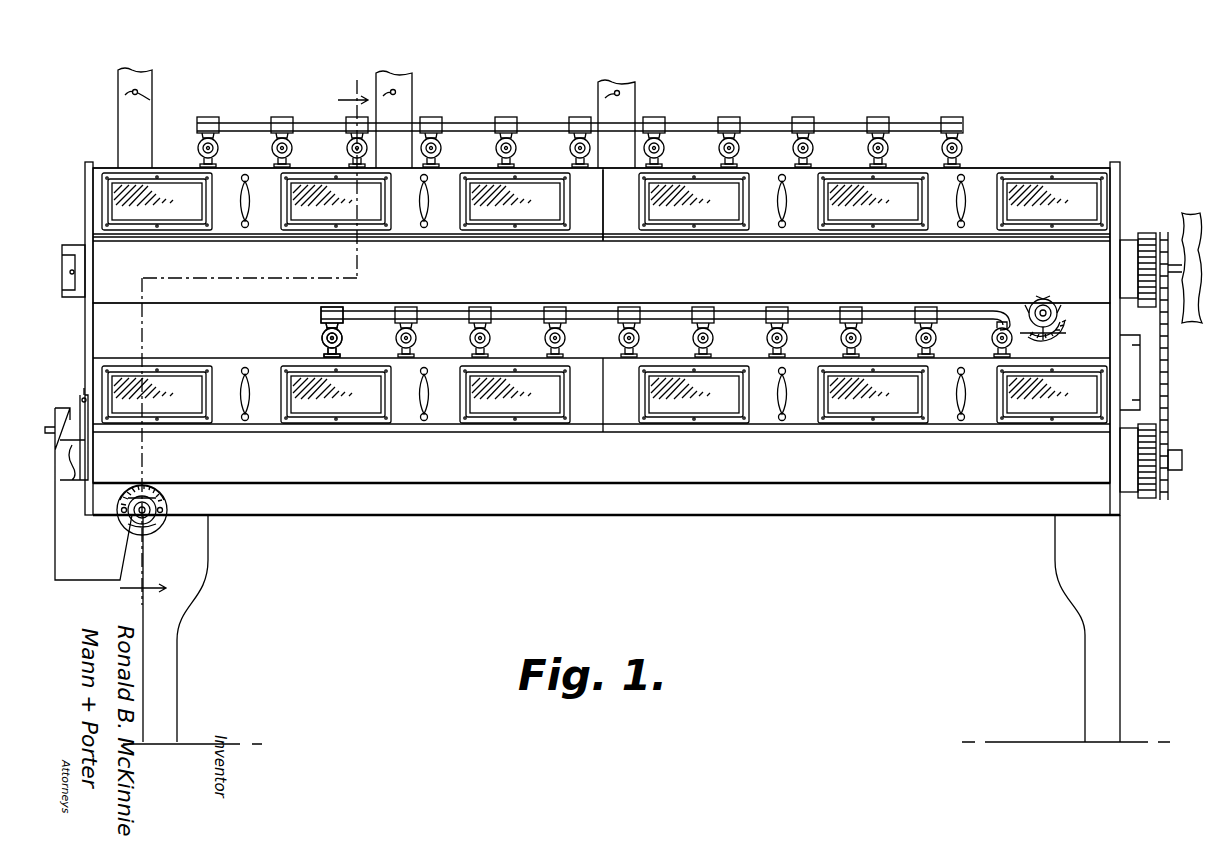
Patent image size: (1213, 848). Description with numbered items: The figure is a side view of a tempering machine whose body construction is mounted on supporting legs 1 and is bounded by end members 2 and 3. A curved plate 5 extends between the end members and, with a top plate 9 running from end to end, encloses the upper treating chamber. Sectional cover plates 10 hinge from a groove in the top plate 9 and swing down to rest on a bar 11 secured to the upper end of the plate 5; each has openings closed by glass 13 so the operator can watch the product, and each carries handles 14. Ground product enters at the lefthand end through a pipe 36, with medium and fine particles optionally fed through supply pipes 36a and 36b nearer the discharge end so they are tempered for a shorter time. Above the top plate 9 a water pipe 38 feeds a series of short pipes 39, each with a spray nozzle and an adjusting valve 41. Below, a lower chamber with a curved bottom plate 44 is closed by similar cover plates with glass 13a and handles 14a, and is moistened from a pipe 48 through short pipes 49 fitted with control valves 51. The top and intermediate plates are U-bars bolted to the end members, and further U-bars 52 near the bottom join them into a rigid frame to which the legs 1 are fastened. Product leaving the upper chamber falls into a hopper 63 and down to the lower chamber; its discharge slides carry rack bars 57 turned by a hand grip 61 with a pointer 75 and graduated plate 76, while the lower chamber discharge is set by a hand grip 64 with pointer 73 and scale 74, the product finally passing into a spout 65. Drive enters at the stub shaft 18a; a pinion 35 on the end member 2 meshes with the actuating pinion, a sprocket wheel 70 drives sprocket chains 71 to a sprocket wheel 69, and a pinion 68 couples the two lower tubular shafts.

The supporting legs 1 is at (175, 637).
The end member 2 is at (1114, 162).
The end member 3 is at (86, 164).
The plate 5 is at (601, 235).
The top plate 9 is at (998, 168).
The cover plate 10 is at (586, 205).
The bar 11 is at (400, 242).
The glass 13 is at (604, 201).
The glass 13a is at (604, 394).
The handles 14 is at (250, 203).
The handles 14a is at (775, 410).
The stub shaft 18a is at (1180, 265).
The pinion 35 is at (1145, 262).
The pipe 36 is at (142, 103).
The supply pipe 36a is at (412, 105).
The supply pipe 36b is at (630, 114).
The pipe 38 is at (780, 125).
The short pipes 39 is at (793, 147).
The valve 41 is at (347, 152).
The curved bottom plate 44 is at (601, 393).
The pipe 48 is at (727, 311).
The short pipes 49 is at (697, 350).
The control valve 51 is at (343, 341).
The U-bars 52 is at (606, 499).
The rack bar 57 is at (1030, 305).
The hand grip 61 is at (1052, 299).
The hopper 63 is at (1067, 320).
The hand grip 64 is at (168, 508).
The spout 65 is at (88, 484).
The pinion 68 is at (1140, 462).
The sprocket wheel 69 is at (1165, 500).
The sprocket wheel 70 is at (1160, 234).
The sprocket chains 71 is at (1160, 366).
The pointer 73 is at (135, 498).
The scale 74 is at (170, 497).
The pointer 75 is at (1048, 330).
The graduated plate 76 is at (993, 339).